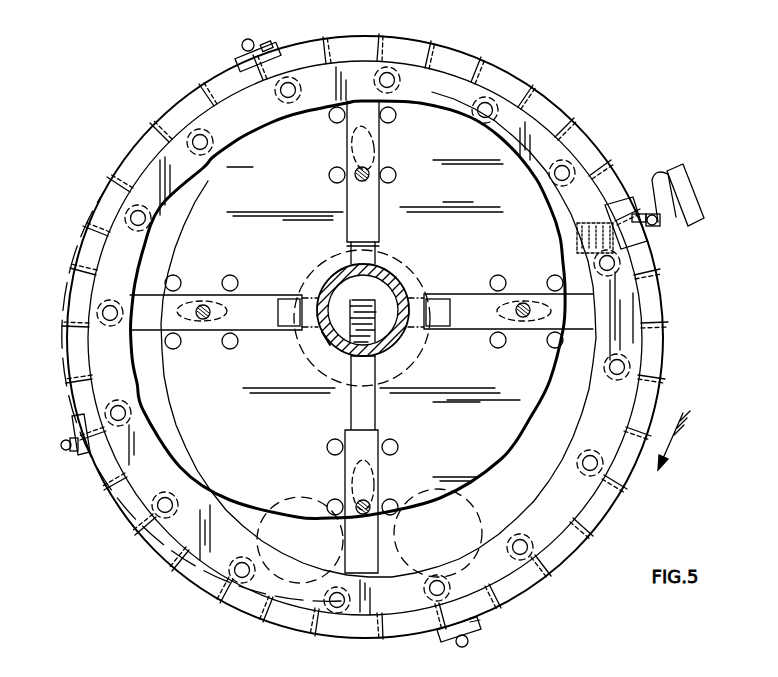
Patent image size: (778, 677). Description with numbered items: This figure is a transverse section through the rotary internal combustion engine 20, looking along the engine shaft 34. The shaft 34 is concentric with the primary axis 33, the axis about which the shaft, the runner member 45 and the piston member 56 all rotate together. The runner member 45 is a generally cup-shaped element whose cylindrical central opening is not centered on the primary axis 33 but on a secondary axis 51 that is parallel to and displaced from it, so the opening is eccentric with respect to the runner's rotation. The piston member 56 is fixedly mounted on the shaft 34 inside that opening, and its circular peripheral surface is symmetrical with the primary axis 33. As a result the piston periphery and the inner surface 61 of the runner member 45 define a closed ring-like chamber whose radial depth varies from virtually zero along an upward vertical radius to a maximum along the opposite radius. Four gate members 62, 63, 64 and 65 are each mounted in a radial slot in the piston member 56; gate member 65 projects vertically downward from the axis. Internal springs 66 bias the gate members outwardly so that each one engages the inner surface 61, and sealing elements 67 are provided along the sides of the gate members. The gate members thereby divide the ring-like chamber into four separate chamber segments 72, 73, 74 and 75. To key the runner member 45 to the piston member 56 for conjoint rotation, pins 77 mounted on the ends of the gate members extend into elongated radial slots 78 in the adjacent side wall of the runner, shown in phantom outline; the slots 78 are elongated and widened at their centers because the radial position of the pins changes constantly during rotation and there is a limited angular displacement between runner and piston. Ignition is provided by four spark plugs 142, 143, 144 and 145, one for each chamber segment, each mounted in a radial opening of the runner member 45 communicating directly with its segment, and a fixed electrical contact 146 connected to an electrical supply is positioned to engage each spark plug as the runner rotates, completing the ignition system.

The rotary internal combustion engine 20 is at (583, 83).
The runner member 45 is at (440, 95).
The primary axis 33 is at (365, 305).
The engine shaft 34 is at (404, 278).
The secondary axis 51 is at (378, 353).
The piston member 56 is at (447, 429).
The inner surface of runner member 61 is at (579, 397).
The gate member 62 is at (268, 332).
The gate member 63 is at (356, 232).
The gate member 64 is at (467, 332).
The gate member 65 is at (345, 446).
The internal springs 66 is at (340, 343).
The sealing elements 67 is at (392, 120).
The chamber segment 72 is at (141, 284).
The chamber segment 73 is at (555, 222).
The chamber segment 74 is at (511, 489).
The chamber segment 75 is at (195, 489).
The pins 77 is at (357, 179).
The radial slots 78 is at (352, 140).
The spark plug 142 is at (270, 47).
The spark plug 143 is at (655, 245).
The spark plug 144 is at (483, 626).
The spark plug 145 is at (74, 454).
The fixed electrical contact 146 is at (653, 178).